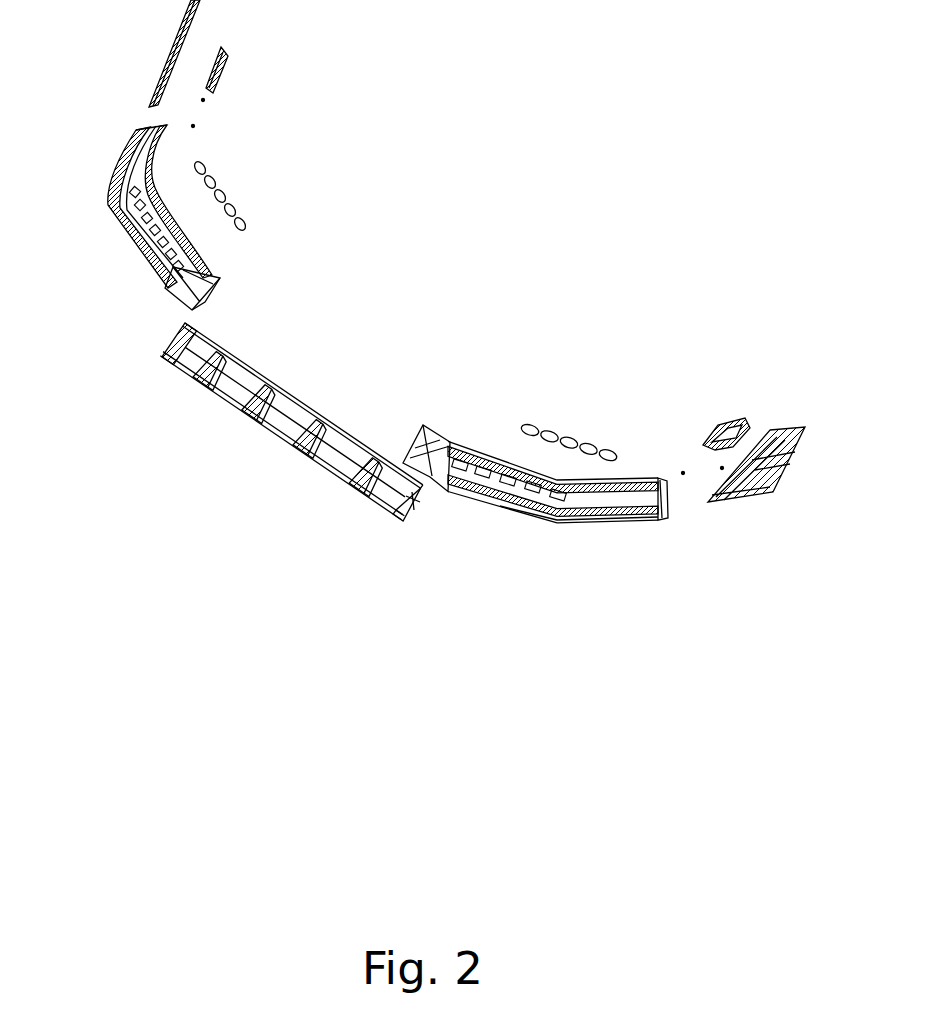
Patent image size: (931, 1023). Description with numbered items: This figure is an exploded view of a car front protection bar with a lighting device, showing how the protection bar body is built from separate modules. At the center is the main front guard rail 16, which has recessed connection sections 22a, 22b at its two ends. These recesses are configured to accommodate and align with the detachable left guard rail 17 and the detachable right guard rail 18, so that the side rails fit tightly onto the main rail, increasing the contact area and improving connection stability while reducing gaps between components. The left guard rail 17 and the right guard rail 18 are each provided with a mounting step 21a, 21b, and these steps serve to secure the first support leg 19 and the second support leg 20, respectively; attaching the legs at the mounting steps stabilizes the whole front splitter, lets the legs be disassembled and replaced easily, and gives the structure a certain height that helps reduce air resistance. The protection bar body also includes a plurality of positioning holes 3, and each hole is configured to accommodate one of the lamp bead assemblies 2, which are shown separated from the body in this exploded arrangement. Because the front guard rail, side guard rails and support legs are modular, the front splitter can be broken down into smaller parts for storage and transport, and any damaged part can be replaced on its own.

The lamp bead assembly 2 is at (548, 427).
The positioning hole 3 is at (477, 497).
The main front guard rail 16 is at (257, 432).
The detachable left guard rail 17 is at (658, 521).
The detachable right guard rail 18 is at (130, 153).
The first support leg 19 is at (790, 428).
The second support leg 20 is at (171, 50).
The mounting step 21a is at (588, 522).
The mounting step 21b is at (118, 176).
The recessed connection section 22a is at (403, 522).
The recessed connection section 22b is at (172, 345).